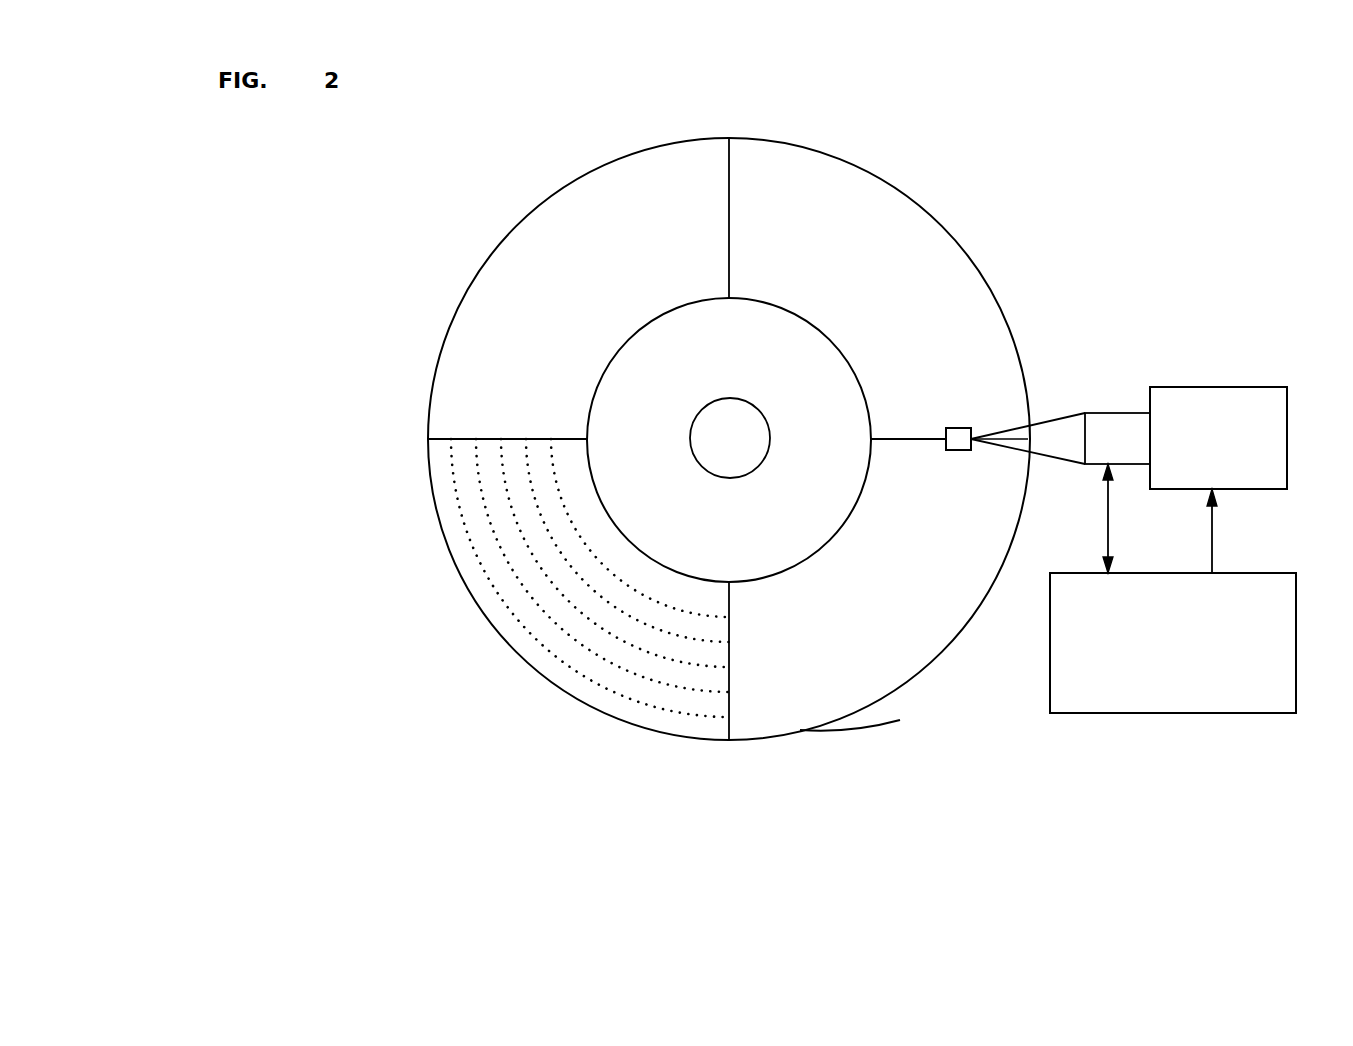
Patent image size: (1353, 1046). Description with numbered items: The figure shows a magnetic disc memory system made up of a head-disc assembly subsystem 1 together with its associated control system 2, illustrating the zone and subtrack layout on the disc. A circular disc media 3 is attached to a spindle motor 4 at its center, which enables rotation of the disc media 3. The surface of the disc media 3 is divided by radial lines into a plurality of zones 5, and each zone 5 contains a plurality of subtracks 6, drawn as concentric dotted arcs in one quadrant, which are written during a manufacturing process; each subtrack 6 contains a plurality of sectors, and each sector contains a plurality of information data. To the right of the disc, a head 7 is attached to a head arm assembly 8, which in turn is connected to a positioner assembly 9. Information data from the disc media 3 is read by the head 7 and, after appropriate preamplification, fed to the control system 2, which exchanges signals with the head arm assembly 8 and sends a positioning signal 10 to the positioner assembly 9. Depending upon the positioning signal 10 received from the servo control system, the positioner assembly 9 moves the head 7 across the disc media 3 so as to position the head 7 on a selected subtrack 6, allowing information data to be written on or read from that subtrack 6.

The head-disc assembly subsystem 1 is at (940, 177).
The control system 2 is at (1105, 702).
The disc media 3 is at (840, 720).
The spindle motor 4 is at (722, 443).
The zone 5 is at (687, 405).
The subtrack 6 is at (623, 653).
The head 7 is at (970, 427).
The head arm assembly 8 is at (1055, 430).
The positioner assembly 9 is at (1248, 413).
The positioning signal 10 is at (1213, 565).